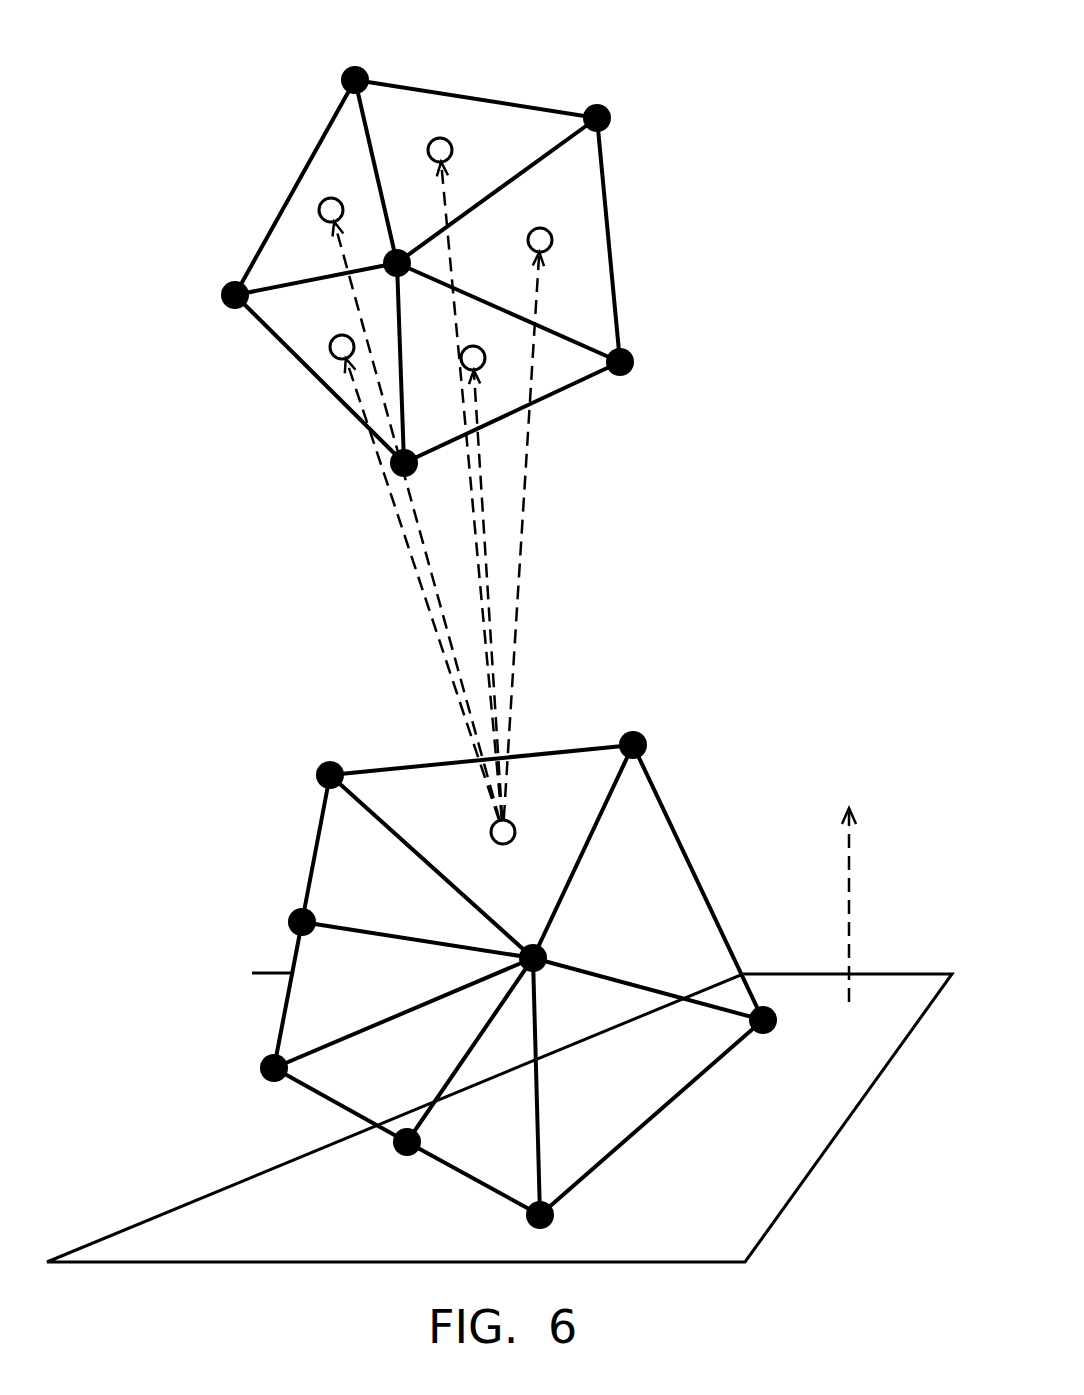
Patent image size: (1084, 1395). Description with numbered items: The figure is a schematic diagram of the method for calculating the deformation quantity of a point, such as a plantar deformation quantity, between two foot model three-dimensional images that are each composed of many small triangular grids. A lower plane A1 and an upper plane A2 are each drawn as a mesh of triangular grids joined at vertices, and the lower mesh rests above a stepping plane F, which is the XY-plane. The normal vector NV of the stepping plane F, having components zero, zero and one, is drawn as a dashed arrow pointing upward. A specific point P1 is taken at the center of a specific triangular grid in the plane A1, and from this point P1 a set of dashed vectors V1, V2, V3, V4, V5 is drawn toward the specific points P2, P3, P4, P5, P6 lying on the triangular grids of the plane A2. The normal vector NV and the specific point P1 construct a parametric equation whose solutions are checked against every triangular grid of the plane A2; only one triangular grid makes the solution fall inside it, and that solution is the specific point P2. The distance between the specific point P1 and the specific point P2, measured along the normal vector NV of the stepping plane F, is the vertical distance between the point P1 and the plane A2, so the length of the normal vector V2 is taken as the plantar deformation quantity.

The plane A1 is at (700, 877).
The plane A2 is at (476, 96).
The stepping plane F is at (856, 1112).
The normal vector NV is at (850, 888).
The specific point P1 is at (516, 828).
The specific point P2 is at (473, 345).
The specific point P3 is at (553, 236).
The specific point P4 is at (440, 137).
The specific point P5 is at (319, 206).
The specific point P6 is at (329, 350).
The vector V1 is at (525, 497).
The normal vector V2 is at (482, 447).
The vector V3 is at (455, 298).
The vector V4 is at (430, 572).
The vector V5 is at (403, 535).